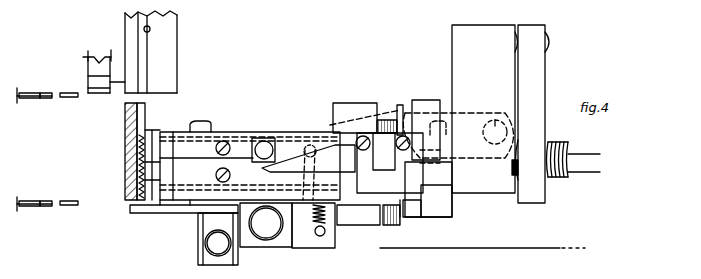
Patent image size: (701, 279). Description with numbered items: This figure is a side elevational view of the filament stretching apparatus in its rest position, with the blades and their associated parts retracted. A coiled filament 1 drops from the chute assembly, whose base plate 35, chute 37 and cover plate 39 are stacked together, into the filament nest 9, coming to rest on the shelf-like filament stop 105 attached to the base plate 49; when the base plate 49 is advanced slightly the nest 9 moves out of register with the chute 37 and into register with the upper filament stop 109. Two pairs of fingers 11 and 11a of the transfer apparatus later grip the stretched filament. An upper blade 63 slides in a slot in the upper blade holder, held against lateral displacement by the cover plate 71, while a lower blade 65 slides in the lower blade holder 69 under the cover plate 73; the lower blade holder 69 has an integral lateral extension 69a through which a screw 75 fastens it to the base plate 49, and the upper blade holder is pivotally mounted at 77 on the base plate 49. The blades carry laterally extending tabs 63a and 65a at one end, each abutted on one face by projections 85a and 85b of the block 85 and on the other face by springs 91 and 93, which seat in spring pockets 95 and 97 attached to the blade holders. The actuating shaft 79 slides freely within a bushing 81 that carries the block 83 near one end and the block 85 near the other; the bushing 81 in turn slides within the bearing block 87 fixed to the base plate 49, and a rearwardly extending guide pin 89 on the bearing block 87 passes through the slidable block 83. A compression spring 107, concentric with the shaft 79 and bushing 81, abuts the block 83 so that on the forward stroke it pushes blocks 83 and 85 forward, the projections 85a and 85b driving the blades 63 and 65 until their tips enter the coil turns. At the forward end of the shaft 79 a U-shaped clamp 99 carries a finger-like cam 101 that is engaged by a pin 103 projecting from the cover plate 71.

The filament 1 is at (138, 146).
The filament nest 9 is at (146, 112).
The fingers 11 is at (36, 93).
The fingers 11a is at (70, 93).
The base plate 35 is at (177, 58).
The chute 37 is at (150, 29).
The cover plate 39 is at (125, 22).
The base plate 49 is at (500, 244).
The upper blade 63 is at (166, 140).
The tab 63a is at (425, 90).
The lower blade 65 is at (165, 192).
The tab 65a is at (402, 217).
The lower blade holder 69 is at (150, 172).
The lateral extension 69a is at (287, 247).
The cover plate 71 is at (234, 132).
The cover plate 73 is at (191, 198).
The screw 75 is at (265, 240).
The pivot 77 is at (496, 118).
The shaft 79 is at (580, 154).
The bushing 81 is at (514, 188).
The block 83 is at (545, 62).
The block 85 is at (440, 190).
The projection 85a is at (440, 105).
The projection 85b is at (420, 212).
The bearing block 87 is at (458, 30).
The guide pin 89 is at (552, 41).
The spring 91 is at (384, 120).
The spring 93 is at (391, 225).
The spring pocket 95 is at (362, 103).
The spring pocket 97 is at (360, 225).
The U-shaped clamp 99 is at (319, 225).
The finger-like cam 101 is at (266, 170).
The pin 103 is at (258, 160).
The filament stop 105 is at (130, 209).
The compression spring 107 is at (568, 138).
The upper filament stop 109 is at (91, 70).